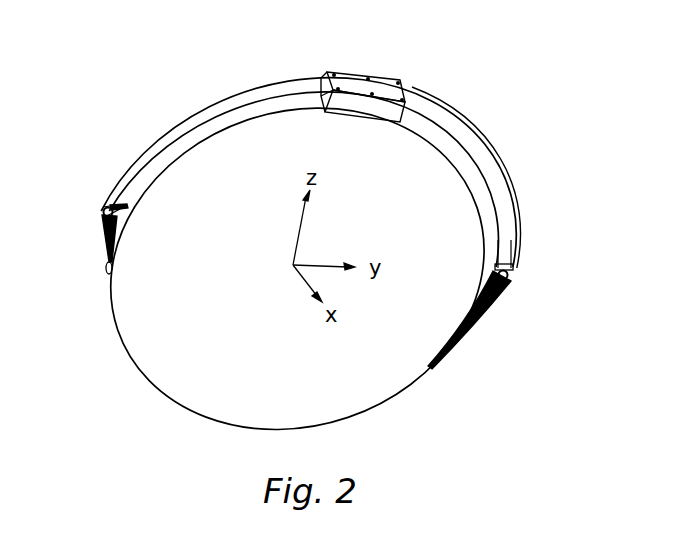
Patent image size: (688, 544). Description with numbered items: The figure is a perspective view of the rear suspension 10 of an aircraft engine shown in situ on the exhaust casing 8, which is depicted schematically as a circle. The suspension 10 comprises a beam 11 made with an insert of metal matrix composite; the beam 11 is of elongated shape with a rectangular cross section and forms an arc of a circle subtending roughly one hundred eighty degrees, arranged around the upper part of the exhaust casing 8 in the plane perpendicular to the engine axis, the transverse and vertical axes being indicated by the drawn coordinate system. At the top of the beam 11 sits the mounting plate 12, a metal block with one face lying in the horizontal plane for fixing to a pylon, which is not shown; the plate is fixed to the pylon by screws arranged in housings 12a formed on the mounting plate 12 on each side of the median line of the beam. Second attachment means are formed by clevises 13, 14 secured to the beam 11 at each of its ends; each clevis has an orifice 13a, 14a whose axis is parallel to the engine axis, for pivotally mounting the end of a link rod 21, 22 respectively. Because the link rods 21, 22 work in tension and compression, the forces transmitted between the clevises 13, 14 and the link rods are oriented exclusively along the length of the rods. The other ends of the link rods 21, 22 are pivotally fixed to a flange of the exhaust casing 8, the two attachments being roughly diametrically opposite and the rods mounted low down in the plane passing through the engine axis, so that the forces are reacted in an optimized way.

The exhaust casing 8 is at (154, 385).
The rear suspension 10 is at (478, 120).
The beam 11 is at (247, 112).
The mounting plate 12 is at (363, 106).
The housings 12a is at (400, 82).
The clevis 13 is at (103, 209).
The orifice 13a is at (113, 212).
The clevis 14 is at (497, 268).
The orifice 14a is at (508, 275).
The link rod 21 is at (118, 242).
The link rod 22 is at (467, 313).